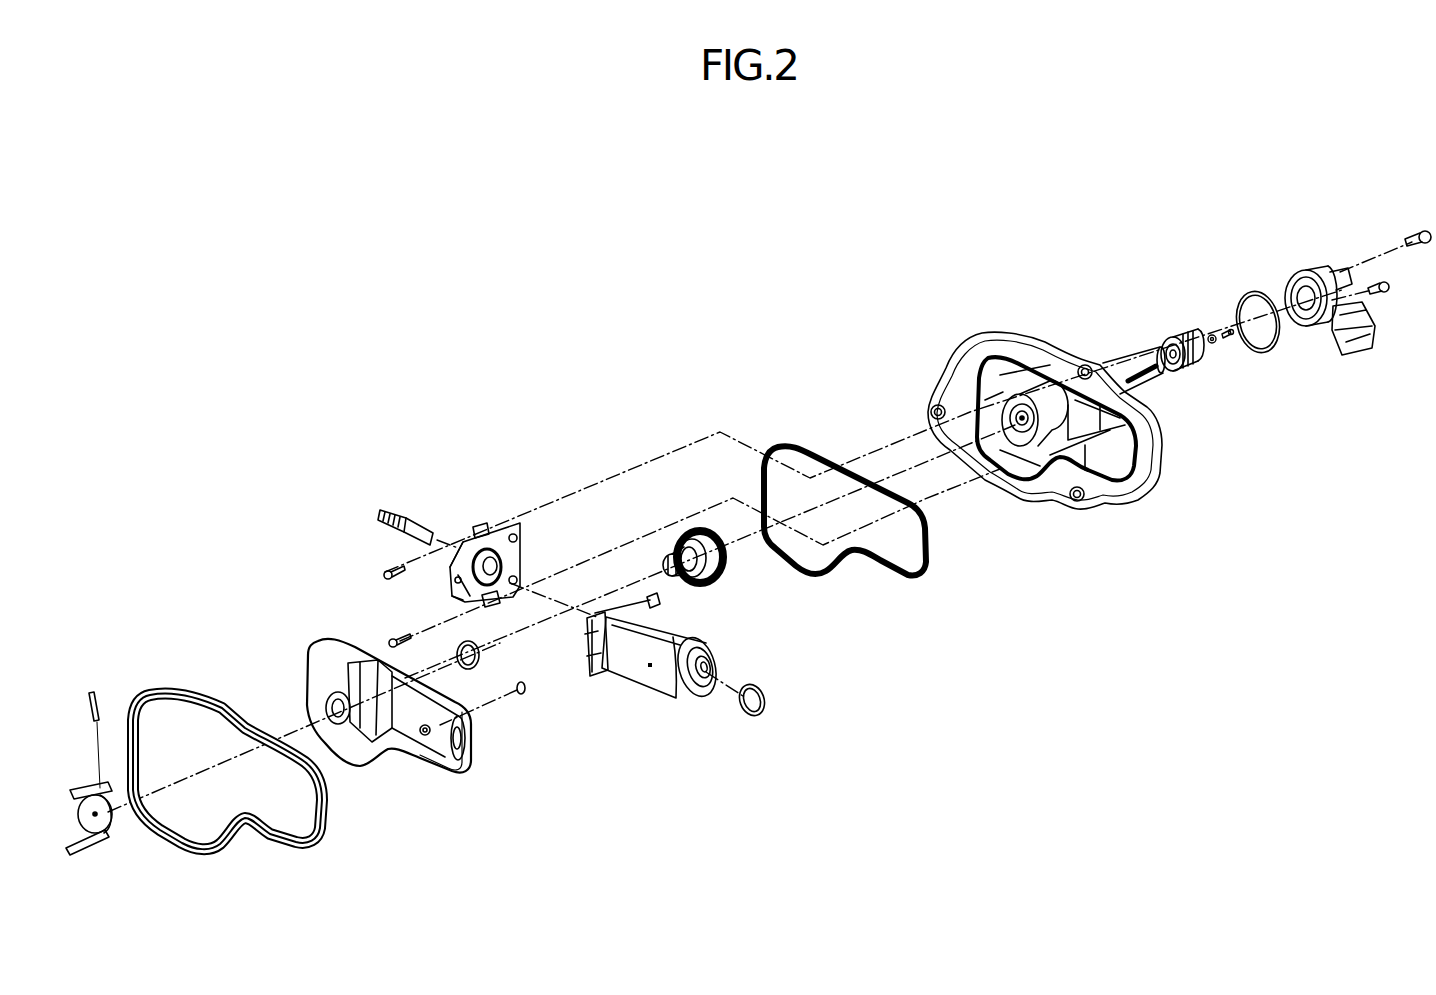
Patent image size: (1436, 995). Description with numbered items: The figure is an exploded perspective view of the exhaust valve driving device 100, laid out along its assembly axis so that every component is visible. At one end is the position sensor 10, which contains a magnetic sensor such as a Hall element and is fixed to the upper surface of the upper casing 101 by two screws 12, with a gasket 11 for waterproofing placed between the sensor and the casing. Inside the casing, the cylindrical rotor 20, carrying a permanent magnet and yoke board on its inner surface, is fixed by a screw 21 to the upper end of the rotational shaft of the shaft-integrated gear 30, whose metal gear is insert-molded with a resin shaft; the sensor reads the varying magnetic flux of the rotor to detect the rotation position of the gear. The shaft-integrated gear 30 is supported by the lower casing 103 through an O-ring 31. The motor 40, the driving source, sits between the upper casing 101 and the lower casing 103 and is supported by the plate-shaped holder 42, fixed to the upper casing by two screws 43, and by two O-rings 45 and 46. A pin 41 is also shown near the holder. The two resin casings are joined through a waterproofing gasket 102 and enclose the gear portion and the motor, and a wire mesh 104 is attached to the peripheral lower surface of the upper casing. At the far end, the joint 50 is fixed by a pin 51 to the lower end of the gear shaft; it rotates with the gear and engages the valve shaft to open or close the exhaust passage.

The exhaust valve driving device 100 is at (196, 289).
The upper casing 101 is at (976, 331).
The gasket 102 is at (791, 446).
The lower casing 103 is at (326, 633).
The wire mesh 104 is at (166, 688).
The position sensor 10 is at (1308, 268).
The gasket 11 is at (1246, 290).
The screws 12 is at (1414, 228).
The rotor 20 is at (1171, 337).
The screw 21 is at (1211, 333).
The shaft-integrated gear 30 is at (722, 582).
The O-ring 31 is at (482, 657).
The motor 40 is at (645, 668).
The pin 41 is at (419, 518).
The holder 42 is at (509, 528).
The screws 43 is at (384, 571).
The O-ring 45 is at (521, 696).
The O-ring 46 is at (753, 718).
The joint 50 is at (88, 788).
The pin 51 is at (96, 694).